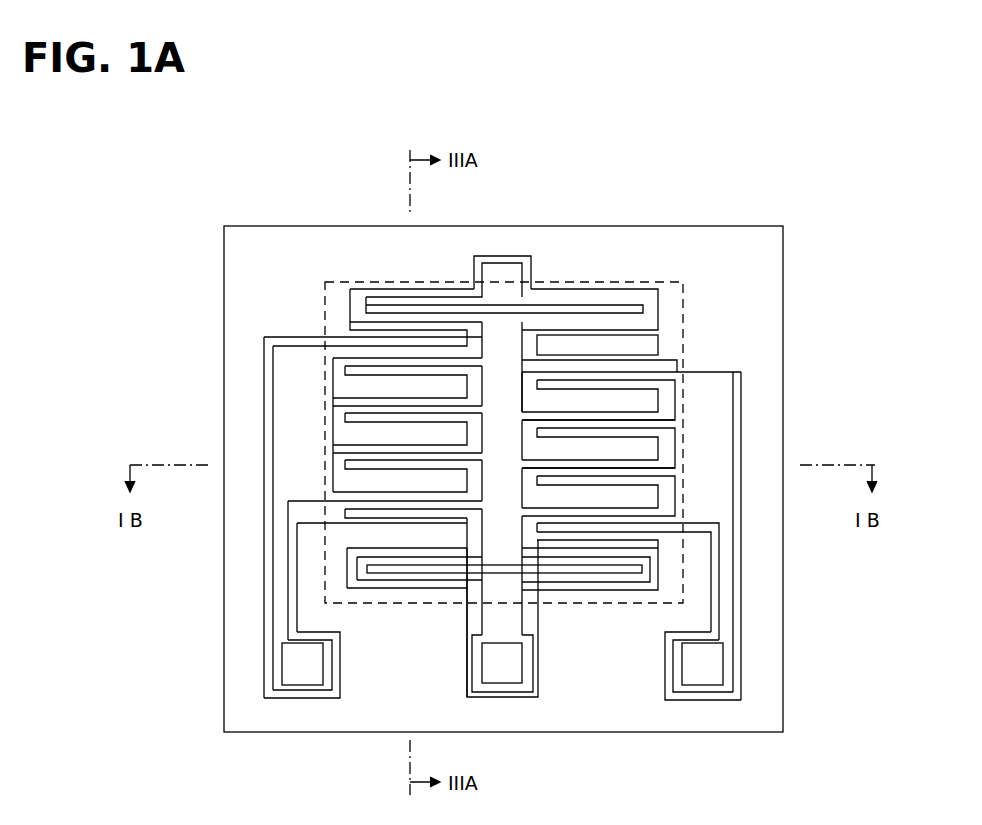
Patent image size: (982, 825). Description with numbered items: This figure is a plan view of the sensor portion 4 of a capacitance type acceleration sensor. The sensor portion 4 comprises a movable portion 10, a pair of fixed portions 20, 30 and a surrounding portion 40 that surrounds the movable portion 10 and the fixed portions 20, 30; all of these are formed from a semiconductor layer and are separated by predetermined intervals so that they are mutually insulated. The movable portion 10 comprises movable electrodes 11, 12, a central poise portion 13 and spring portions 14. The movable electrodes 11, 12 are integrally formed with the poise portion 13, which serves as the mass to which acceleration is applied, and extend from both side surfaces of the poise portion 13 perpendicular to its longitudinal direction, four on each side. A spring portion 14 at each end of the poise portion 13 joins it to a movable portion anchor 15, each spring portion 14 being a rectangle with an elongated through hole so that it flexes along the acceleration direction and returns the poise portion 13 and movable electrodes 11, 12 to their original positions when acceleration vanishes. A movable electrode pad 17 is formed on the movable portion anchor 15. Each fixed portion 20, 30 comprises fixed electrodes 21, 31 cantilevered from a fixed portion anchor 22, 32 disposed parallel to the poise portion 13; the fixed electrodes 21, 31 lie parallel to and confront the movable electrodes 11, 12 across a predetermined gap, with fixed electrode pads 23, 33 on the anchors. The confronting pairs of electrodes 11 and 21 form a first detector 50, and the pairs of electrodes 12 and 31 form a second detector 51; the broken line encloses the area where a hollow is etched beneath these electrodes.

The sensor portion 4 is at (789, 210).
The movable portion 10 is at (622, 282).
The movable electrode 11 is at (383, 467).
The movable electrode 12 is at (650, 363).
The poise portion 13 is at (510, 338).
The spring portion 14 is at (593, 303).
The movable portion anchor 15 is at (530, 660).
The movable electrode pad 17 is at (503, 666).
The fixed portion 20 is at (293, 330).
The fixed electrode 21 is at (382, 398).
The fixed portion anchor 22 is at (292, 432).
The fixed electrode pad 23 is at (305, 670).
The fixed portion 30 is at (745, 385).
The fixed electrode 31 is at (598, 480).
The fixed portion anchor 32 is at (715, 523).
The fixed electrode pad 33 is at (708, 667).
The surrounding portion 40 is at (245, 237).
The first detector 50 is at (396, 525).
The second detector 51 is at (613, 350).